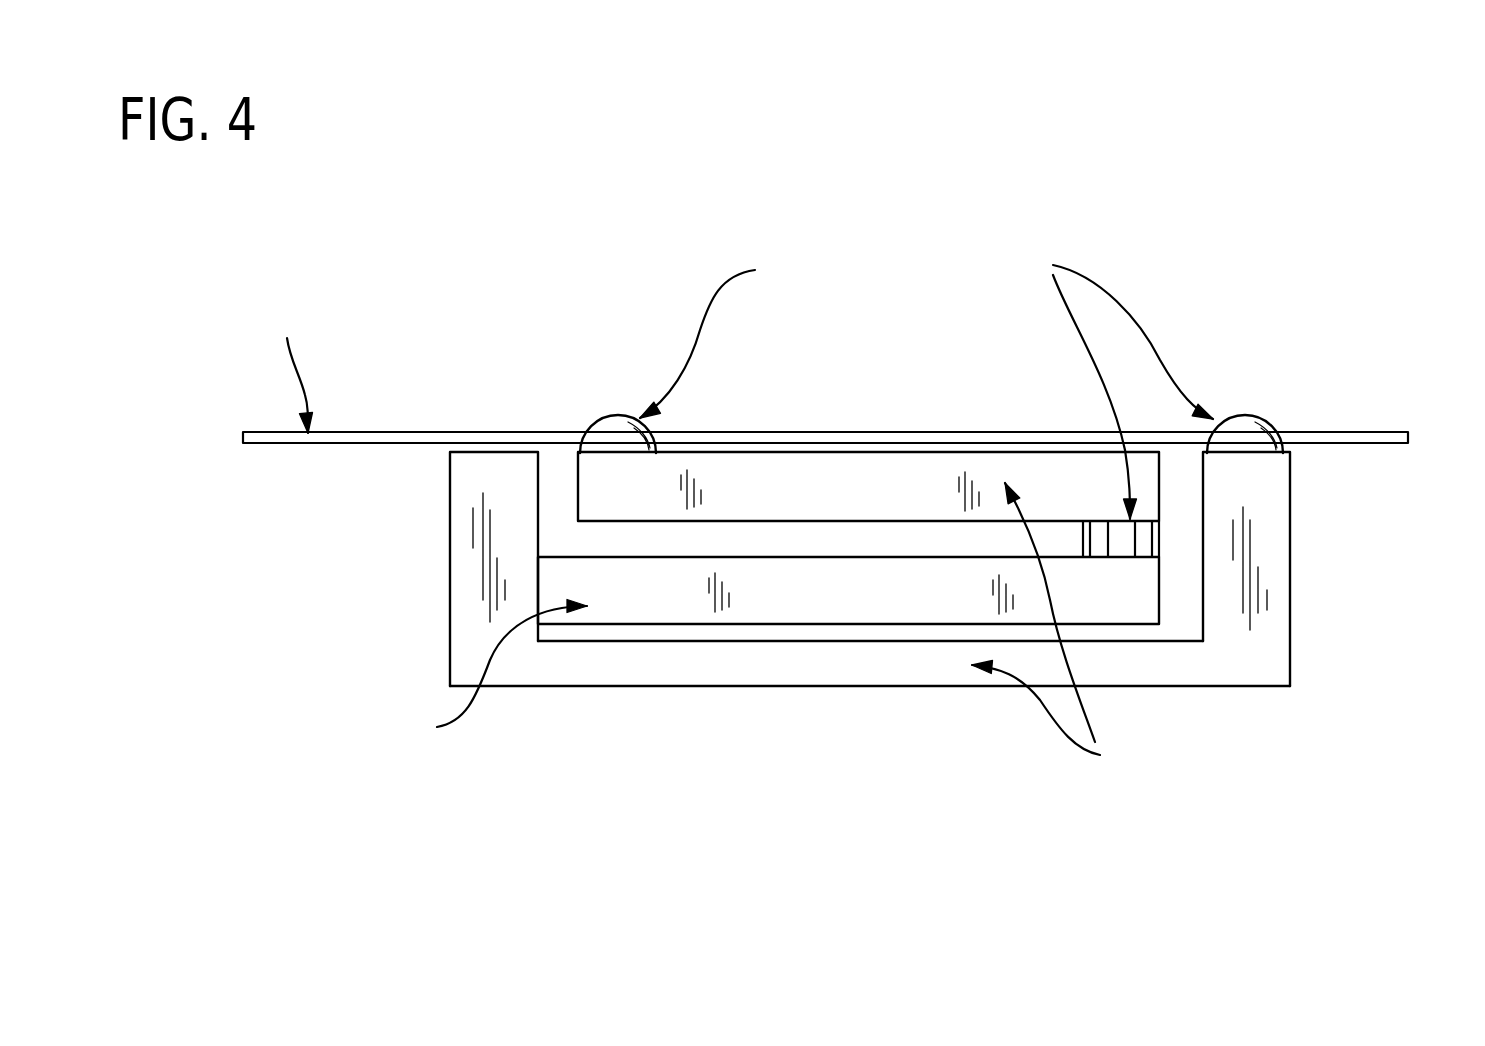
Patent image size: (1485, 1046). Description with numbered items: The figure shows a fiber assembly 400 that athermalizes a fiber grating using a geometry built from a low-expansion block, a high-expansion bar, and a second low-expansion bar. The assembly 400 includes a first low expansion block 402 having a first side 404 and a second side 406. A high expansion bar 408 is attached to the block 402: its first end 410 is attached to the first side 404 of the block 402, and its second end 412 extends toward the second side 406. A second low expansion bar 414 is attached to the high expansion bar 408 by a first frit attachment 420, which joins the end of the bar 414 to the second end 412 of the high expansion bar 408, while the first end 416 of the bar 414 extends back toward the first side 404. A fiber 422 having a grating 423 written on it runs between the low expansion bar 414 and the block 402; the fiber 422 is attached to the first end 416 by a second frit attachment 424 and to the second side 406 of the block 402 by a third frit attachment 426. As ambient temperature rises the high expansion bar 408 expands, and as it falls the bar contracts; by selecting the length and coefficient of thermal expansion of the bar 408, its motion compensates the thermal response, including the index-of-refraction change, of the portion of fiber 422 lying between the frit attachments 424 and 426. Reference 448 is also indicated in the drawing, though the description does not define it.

The fiber assembly 400 is at (930, 783).
The first low expansion block 402 is at (595, 687).
The first side 404 is at (450, 663).
The second side 406 is at (1290, 553).
The high expansion bar 408 is at (725, 556).
The first end 410 is at (573, 556).
The second end 412 is at (1063, 557).
The second low expansion bar 414 is at (837, 522).
The first end 416 is at (578, 472).
The first frit attachment 420 is at (1159, 545).
The fiber 422 is at (449, 431).
The grating 423 is at (871, 431).
The second frit attachment 424 is at (618, 415).
The third frit attachment 426 is at (1257, 415).
The gap between upper member and housing wall 448 is at (1160, 486).